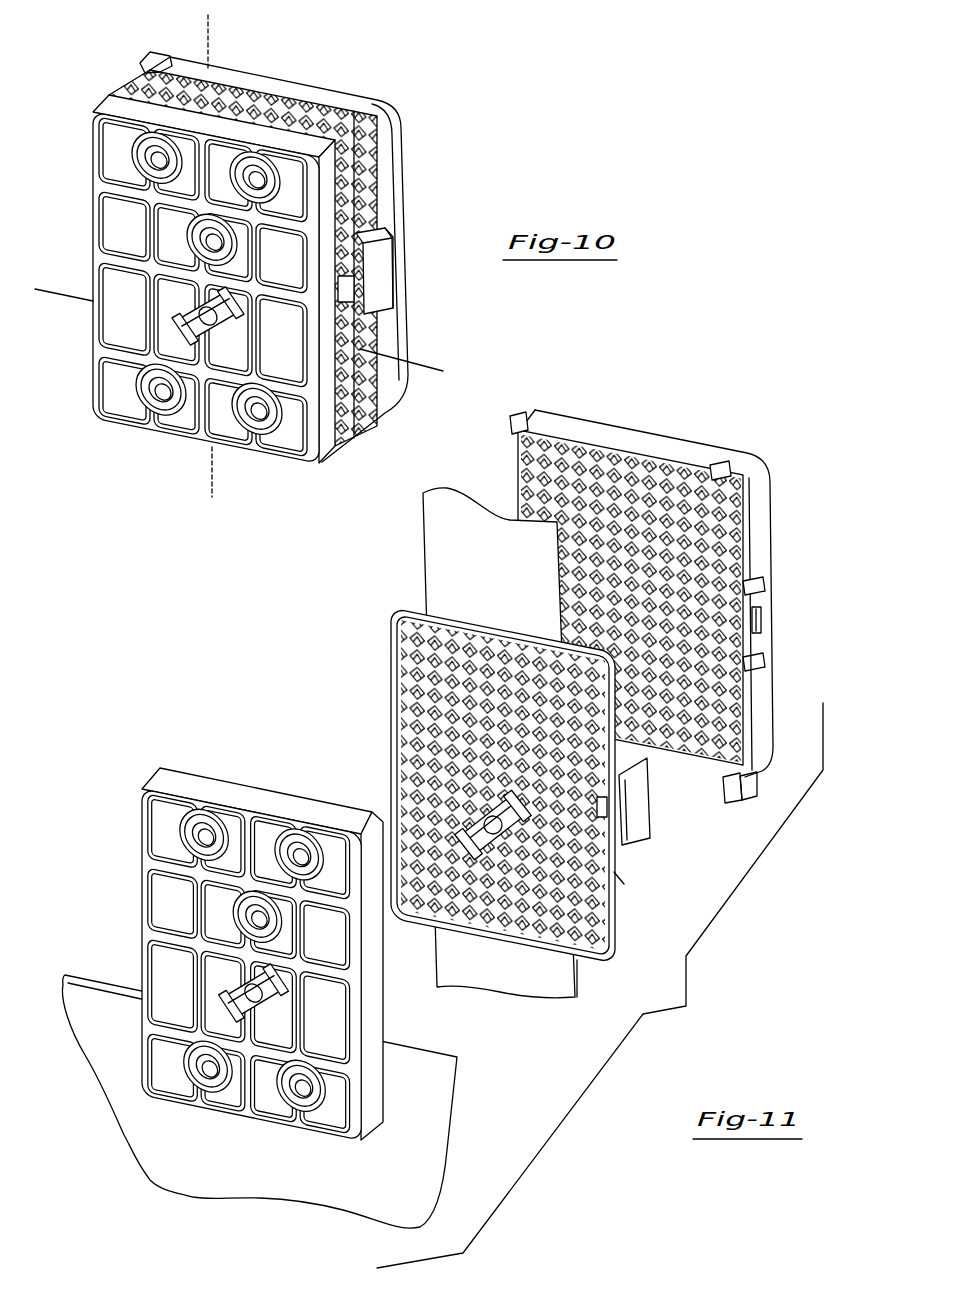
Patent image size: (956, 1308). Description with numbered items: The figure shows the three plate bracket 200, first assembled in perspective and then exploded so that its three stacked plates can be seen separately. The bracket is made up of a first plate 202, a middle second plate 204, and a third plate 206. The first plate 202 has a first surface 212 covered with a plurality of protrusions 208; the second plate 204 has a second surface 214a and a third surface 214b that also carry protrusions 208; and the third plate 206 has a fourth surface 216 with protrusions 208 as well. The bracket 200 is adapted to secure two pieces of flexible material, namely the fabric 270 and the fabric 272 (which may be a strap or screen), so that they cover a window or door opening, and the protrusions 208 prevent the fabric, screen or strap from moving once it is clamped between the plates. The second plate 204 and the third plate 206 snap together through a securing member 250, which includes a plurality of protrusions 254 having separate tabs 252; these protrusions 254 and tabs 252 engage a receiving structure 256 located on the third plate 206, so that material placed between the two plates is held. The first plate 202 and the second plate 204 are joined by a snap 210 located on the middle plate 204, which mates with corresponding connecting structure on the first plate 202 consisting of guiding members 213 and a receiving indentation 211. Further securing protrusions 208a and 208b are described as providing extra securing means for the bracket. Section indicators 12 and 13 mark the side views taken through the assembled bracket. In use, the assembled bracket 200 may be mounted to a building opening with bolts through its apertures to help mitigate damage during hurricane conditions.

In FIG. 10, the section line 12- 12 is at (213, 33).
In FIG. 10, the section line 13- 13 is at (70, 283).
In FIG. 10, the three plate bracket 200 is at (414, 111).
In FIG. 11, the three plate bracket 200 is at (611, 402).
In FIG. 10, the first plate 202 is at (390, 179).
In FIG. 11, the first plate 202 is at (760, 678).
In FIG. 10, the second plate 204 is at (360, 400).
In FIG. 11, the second plate 204 is at (616, 948).
In FIG. 10, the third plate 206 is at (333, 420).
In FIG. 11, the third plate 206 is at (384, 1105).
In FIG. 11, the protrusions 208 is at (740, 560).
In FIG. 11, the upper tab 208a is at (521, 412).
In FIG. 11, the upper tab 208b is at (718, 462).
In FIG. 10, the snap 210 is at (382, 268).
In FIG. 11, the snap 210 is at (636, 796).
In FIG. 11, the receiving indentation 211 is at (762, 624).
In FIG. 11, the first surface 212 is at (517, 460).
In FIG. 11, the guiding members 213 is at (763, 587).
In FIG. 11, the second surface 214a is at (623, 881).
In FIG. 11, the third surface 214b is at (578, 997).
In FIG. 11, the fourth surface 216 is at (150, 760).
In FIG. 10, the securing member 250 is at (205, 312).
In FIG. 11, the tabs 252 is at (444, 832).
In FIG. 11, the protrusions 254 is at (452, 806).
In FIG. 11, the receiving structure 256 is at (258, 975).
In FIG. 11, the fabric 270 is at (432, 1078).
In FIG. 11, the fabric 272 is at (437, 567).